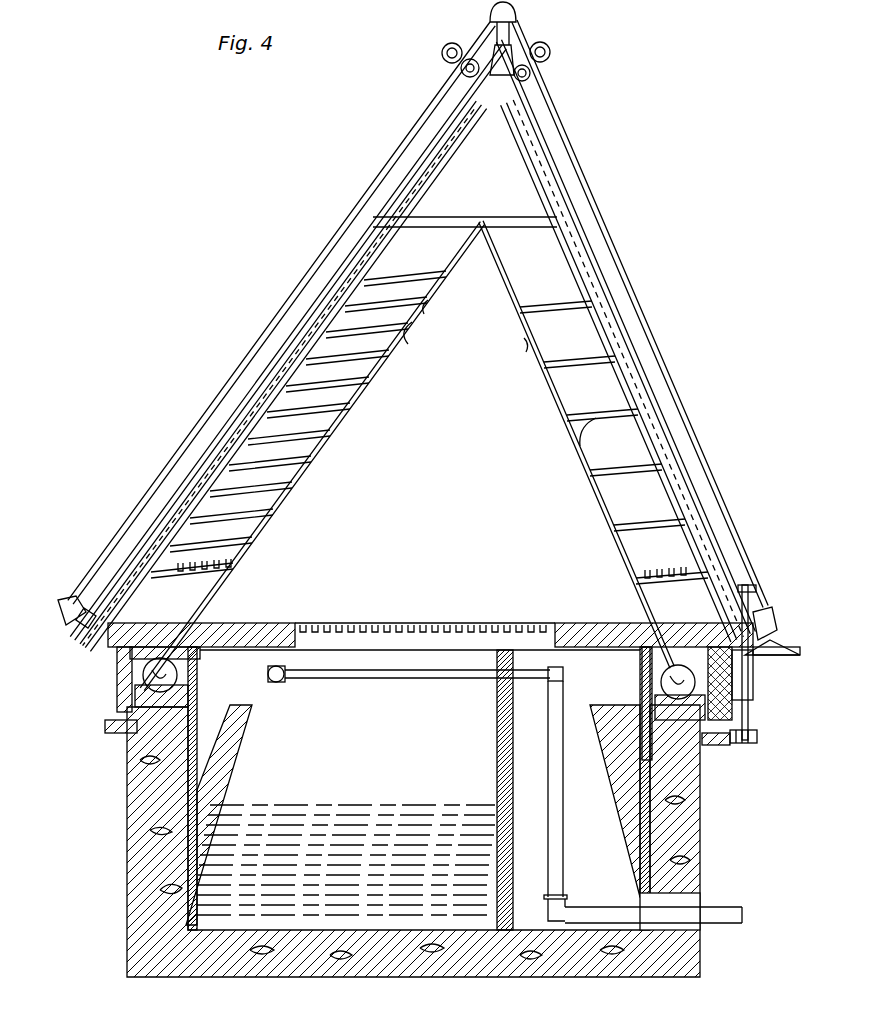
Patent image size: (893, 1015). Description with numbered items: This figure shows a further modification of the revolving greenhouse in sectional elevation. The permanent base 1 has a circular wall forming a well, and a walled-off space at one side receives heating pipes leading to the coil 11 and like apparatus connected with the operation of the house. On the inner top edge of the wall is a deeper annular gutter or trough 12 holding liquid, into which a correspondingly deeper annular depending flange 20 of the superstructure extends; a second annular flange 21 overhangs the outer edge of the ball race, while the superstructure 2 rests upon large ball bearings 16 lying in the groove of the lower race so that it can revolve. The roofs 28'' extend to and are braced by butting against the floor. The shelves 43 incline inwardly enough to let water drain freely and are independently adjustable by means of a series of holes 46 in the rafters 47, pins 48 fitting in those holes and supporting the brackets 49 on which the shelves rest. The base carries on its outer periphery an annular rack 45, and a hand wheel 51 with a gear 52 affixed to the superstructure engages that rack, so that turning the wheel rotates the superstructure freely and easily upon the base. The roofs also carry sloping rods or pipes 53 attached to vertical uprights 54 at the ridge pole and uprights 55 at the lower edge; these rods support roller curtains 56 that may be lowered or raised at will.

The permanent base 1 is at (128, 845).
The greenhouse superstructure 2 is at (375, 232).
The coil 11 is at (400, 673).
The annular gutter or trough 12 is at (222, 751).
The ball bearings 16 is at (157, 674).
The annular depending flange 20 is at (196, 722).
The second annular flange 21 is at (118, 700).
The roofs 28'' is at (413, 373).
The shelves 43 is at (336, 420).
The annular rack 45 is at (705, 752).
The series of holes 46 is at (350, 409).
The rafters 47 is at (306, 462).
The pins 48 is at (430, 302).
The brackets 49 is at (410, 332).
The hand wheel 51 is at (756, 592).
The gear 52 is at (758, 737).
The sloping rods or pipes 53 is at (393, 168).
The vertical uprights 54 is at (512, 28).
The uprights 55 is at (78, 615).
The roller curtains 56 is at (552, 52).